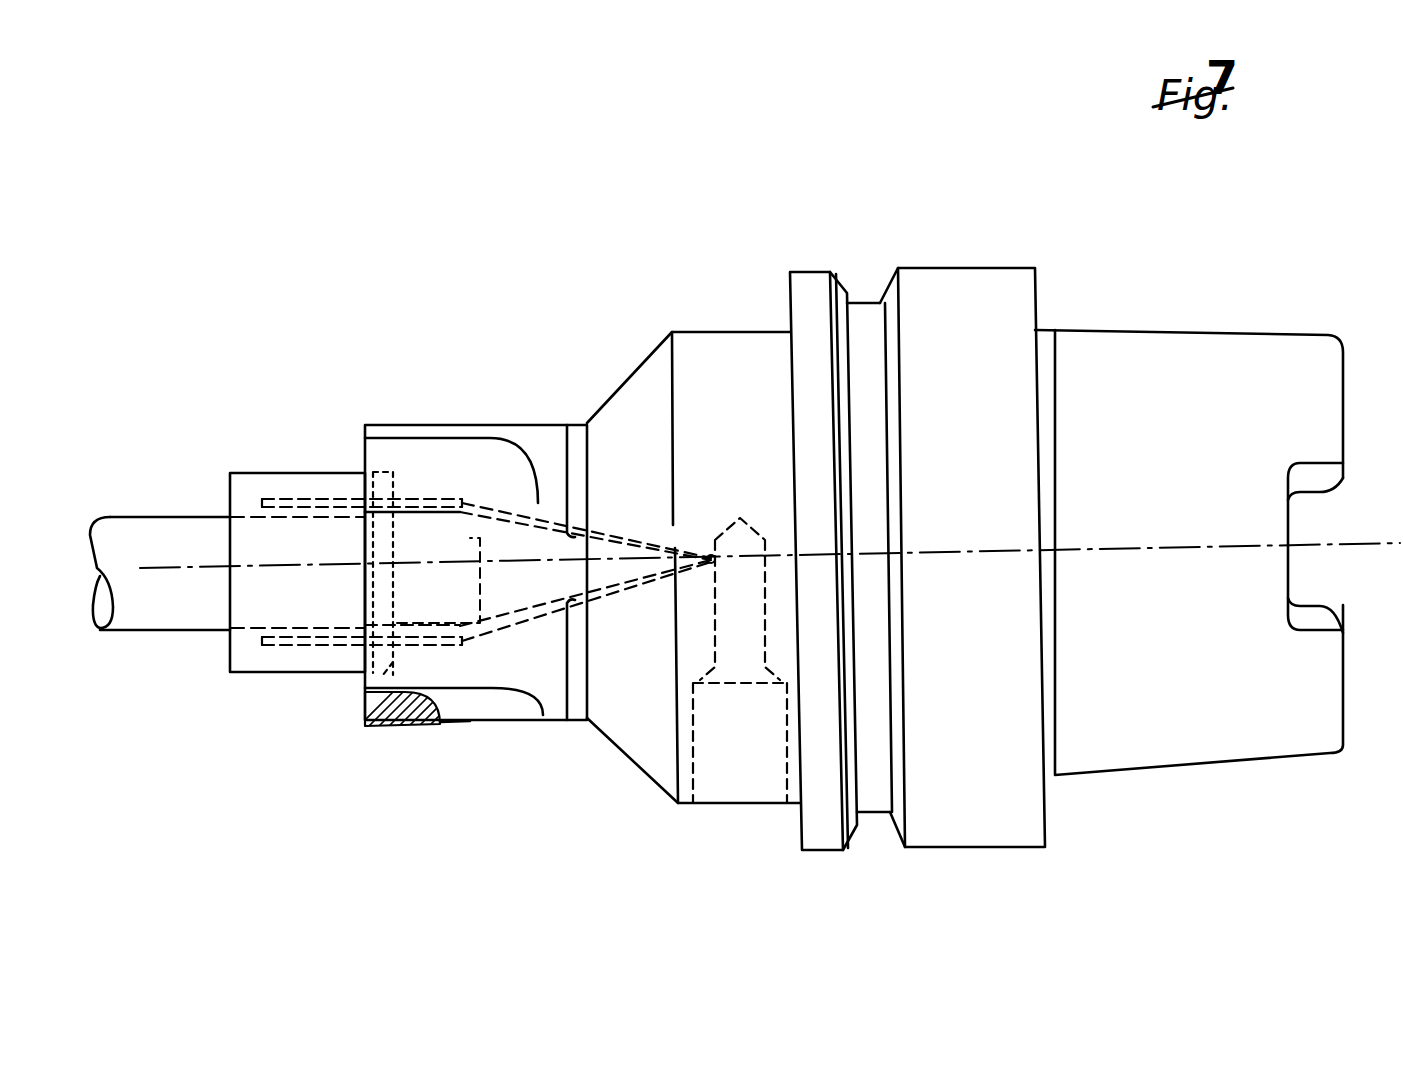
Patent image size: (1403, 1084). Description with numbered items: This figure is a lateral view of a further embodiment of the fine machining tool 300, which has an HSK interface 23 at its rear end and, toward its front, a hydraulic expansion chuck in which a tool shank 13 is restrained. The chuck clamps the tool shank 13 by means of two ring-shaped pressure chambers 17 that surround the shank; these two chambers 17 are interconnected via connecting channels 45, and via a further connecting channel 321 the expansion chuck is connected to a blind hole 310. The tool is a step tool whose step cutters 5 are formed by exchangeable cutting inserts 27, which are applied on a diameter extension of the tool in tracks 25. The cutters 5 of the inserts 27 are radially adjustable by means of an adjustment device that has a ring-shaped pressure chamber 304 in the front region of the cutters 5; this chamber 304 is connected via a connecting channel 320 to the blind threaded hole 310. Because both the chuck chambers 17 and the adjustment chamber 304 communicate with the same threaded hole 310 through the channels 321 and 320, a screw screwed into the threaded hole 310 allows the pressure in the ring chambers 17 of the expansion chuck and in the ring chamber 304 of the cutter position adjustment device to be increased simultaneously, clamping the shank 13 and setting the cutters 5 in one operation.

The gap 5 is at (402, 727).
The tool shank 13 is at (157, 608).
The ring-shaped pressure chamber 17 is at (277, 647).
The taper shank 23 is at (1240, 712).
The track 25 is at (432, 463).
The exchangeable cutting insert 27 is at (365, 732).
The connecting channel 45 is at (363, 492).
The tool 300 is at (647, 393).
The ring-shaped pressure chamber 304 is at (365, 683).
The blind threaded hole 310 is at (742, 773).
The connecting channel 320 is at (555, 527).
The connecting channel 321 is at (570, 713).